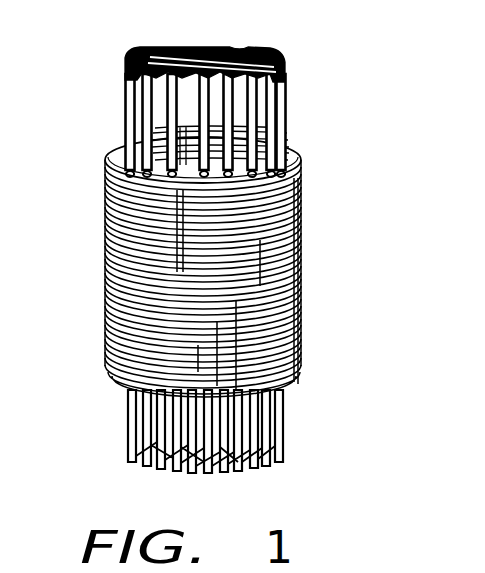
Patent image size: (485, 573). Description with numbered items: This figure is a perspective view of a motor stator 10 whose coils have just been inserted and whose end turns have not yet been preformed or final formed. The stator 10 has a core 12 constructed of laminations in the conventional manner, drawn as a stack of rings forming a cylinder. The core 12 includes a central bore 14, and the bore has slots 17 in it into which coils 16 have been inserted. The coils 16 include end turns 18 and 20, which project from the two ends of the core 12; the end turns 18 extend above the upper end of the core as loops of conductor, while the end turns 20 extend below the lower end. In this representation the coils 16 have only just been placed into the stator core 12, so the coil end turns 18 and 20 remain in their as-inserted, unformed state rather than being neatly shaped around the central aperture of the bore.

The stator 10 is at (340, 158).
The core 12 is at (302, 281).
The central bore 14 is at (275, 122).
The coils 16 is at (118, 95).
The slots 17 is at (133, 168).
The end turns 18 is at (207, 45).
The end turns 20 is at (283, 441).